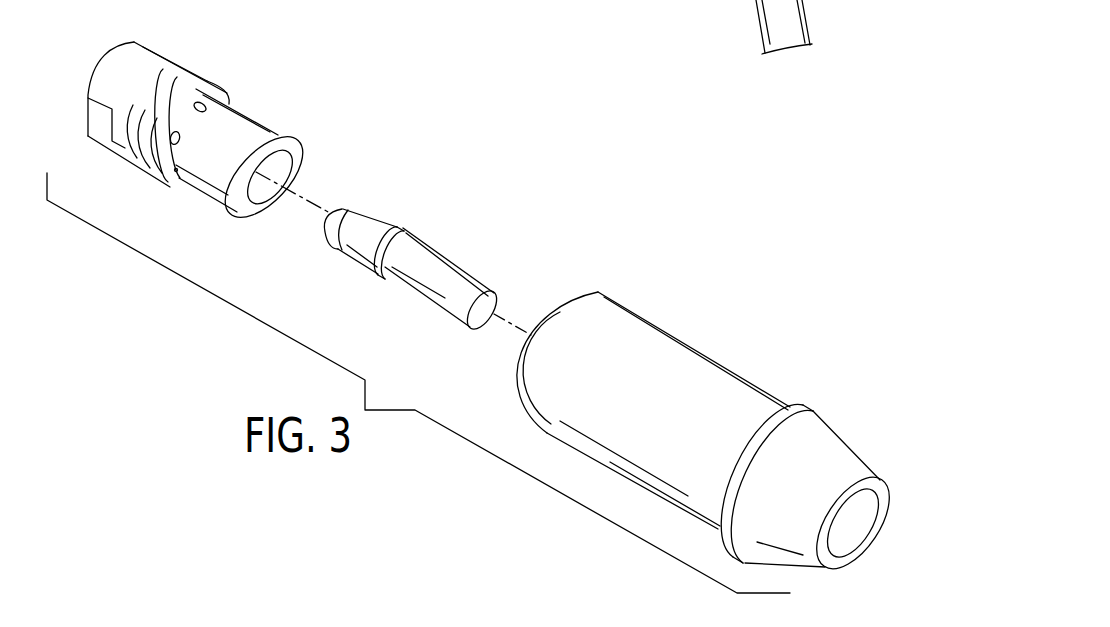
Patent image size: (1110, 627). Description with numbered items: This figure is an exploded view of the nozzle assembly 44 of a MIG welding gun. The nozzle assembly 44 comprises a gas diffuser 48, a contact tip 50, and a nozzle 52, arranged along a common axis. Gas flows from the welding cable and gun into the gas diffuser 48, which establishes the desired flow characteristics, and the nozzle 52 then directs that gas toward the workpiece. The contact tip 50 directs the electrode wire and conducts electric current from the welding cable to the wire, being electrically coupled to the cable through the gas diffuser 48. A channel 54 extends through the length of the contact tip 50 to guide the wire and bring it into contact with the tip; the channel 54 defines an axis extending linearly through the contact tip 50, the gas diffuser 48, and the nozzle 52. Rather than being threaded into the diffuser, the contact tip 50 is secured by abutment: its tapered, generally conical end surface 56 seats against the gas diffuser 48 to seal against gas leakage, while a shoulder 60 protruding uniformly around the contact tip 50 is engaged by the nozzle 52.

The nozzle assembly 44 is at (444, 128).
The gas diffuser 48 is at (170, 54).
The contact tip 50 is at (418, 237).
The nozzle 52 is at (645, 311).
The channel 54 is at (488, 309).
The end surface 56 is at (360, 205).
The shoulder 60 is at (410, 230).